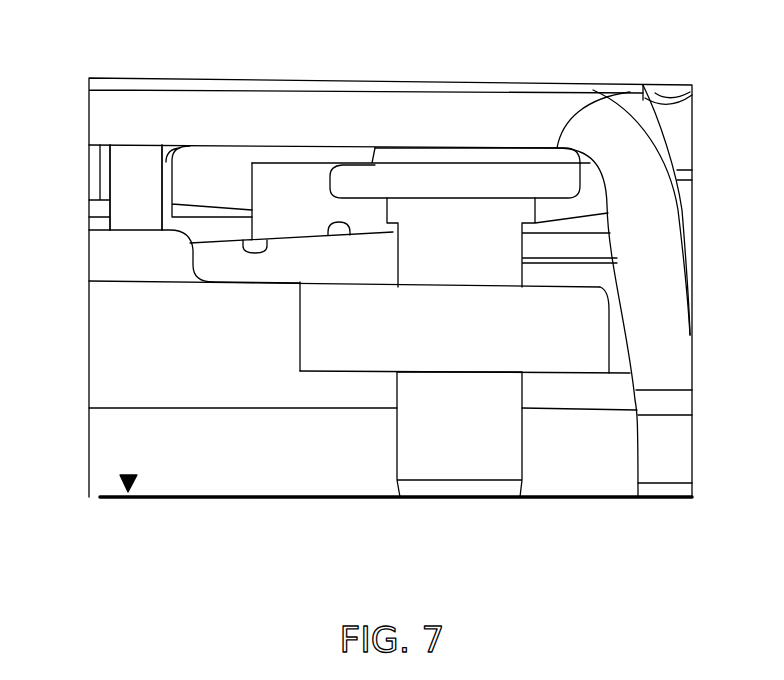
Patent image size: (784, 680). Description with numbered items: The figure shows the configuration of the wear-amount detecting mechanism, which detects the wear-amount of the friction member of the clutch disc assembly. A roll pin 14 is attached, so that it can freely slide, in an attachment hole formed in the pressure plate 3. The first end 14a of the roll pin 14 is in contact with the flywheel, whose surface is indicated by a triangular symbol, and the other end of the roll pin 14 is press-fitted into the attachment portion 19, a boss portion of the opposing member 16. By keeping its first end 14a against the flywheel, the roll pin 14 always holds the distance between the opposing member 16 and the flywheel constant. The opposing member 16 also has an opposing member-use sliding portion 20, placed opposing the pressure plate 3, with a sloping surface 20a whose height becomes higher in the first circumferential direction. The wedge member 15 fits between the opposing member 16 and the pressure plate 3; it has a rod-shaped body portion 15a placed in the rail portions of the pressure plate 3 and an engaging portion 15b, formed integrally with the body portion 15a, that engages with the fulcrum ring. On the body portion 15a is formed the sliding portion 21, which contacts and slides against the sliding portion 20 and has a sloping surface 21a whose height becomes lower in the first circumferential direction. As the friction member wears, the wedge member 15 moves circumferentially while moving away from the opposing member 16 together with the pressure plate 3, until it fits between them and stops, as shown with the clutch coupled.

The pressure plate 3 is at (572, 355).
The roll pin 14 is at (386, 450).
The first end 14a is at (503, 467).
The wedge member 15 is at (230, 310).
The body portion 15a is at (247, 286).
The engaging portion 15b is at (122, 187).
The opposing member 16 is at (325, 158).
The attachment portion 19 is at (555, 182).
The opposing member-use sliding portion 20 is at (287, 177).
The sloping surface 20a is at (237, 238).
The sliding portion 21 is at (312, 277).
The sloping surface 21a is at (348, 233).